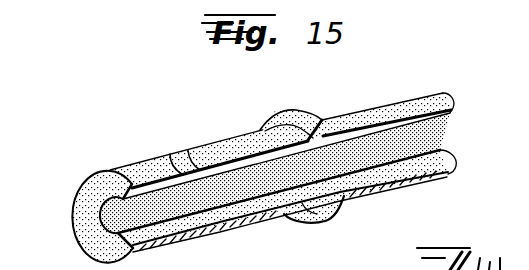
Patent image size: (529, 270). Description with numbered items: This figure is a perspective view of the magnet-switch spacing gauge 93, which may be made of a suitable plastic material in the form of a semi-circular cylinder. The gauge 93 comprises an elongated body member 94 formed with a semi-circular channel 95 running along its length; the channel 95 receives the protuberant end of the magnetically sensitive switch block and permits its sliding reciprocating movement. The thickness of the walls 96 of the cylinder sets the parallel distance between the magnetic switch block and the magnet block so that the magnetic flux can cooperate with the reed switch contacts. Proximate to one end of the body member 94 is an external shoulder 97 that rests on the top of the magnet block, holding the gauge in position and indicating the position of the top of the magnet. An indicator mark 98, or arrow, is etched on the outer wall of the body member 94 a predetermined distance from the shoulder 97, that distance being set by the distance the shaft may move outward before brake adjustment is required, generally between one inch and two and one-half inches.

The magnet-switch spacing gauge 93 is at (390, 200).
The elongated body member 94 is at (362, 113).
The channel 95 is at (412, 137).
The walls 96 is at (83, 196).
The external shoulder 97 is at (328, 222).
The indicator mark 98 is at (182, 156).